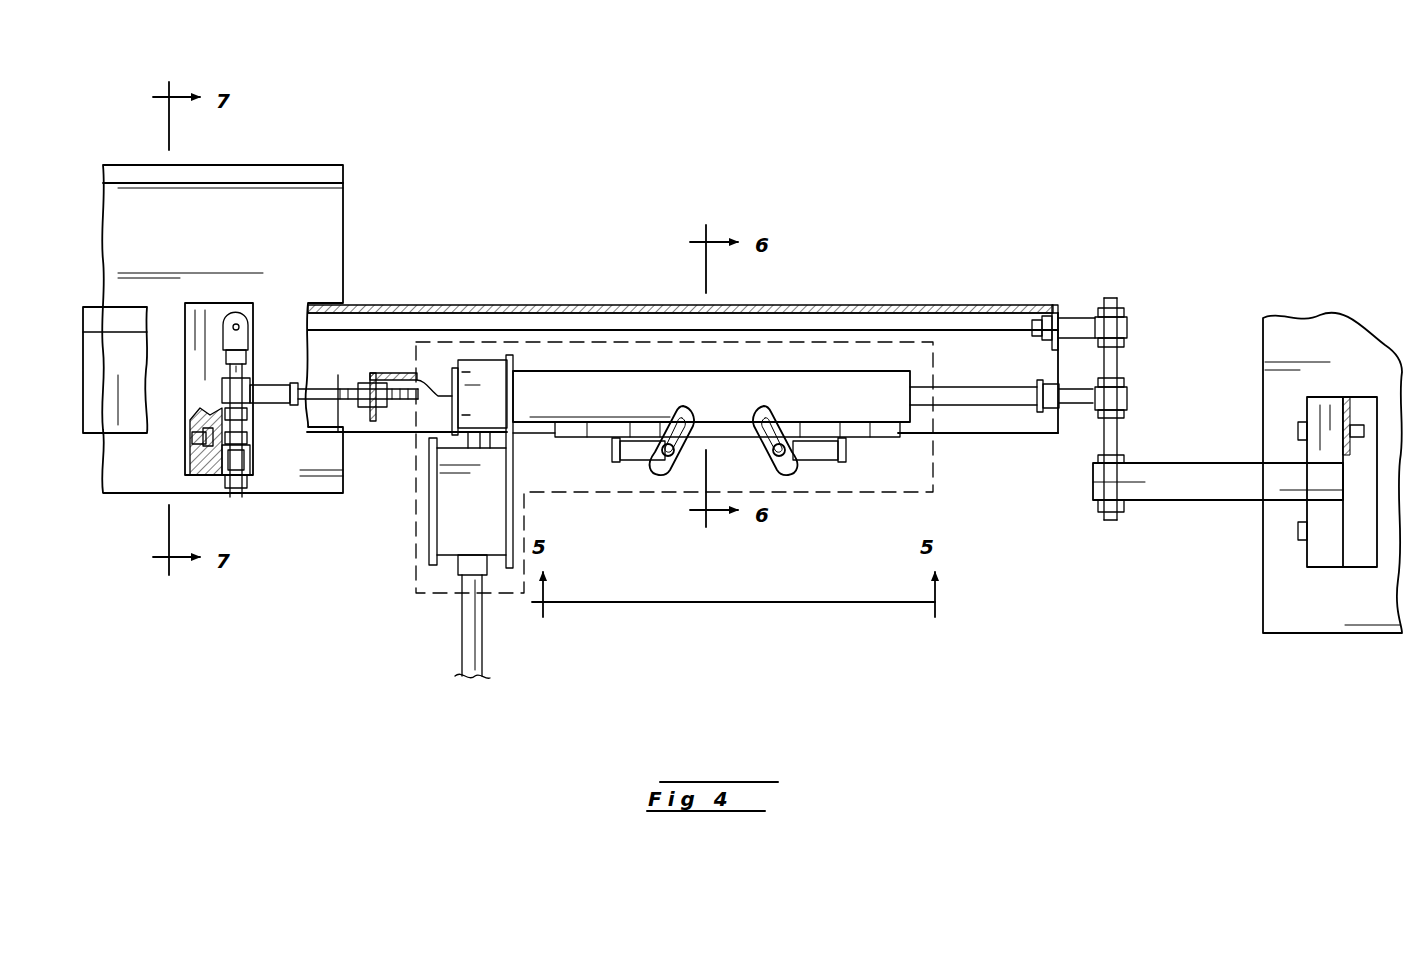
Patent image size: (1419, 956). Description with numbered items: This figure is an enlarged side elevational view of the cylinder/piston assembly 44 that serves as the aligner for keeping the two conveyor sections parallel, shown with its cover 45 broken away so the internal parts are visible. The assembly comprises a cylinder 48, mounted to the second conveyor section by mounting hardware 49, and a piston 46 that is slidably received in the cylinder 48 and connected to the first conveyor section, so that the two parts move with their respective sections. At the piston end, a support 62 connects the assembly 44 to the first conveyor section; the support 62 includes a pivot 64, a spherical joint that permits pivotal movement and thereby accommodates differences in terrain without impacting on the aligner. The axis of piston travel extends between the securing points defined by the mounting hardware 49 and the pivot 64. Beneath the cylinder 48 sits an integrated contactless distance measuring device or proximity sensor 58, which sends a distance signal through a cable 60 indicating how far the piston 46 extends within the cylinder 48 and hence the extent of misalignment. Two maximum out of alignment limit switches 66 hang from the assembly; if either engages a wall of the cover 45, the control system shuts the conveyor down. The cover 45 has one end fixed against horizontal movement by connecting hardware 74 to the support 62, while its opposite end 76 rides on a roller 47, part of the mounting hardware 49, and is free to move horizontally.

The opposite end 76 is at (140, 305).
The roller 47 is at (236, 308).
The mounting hardware 49 is at (270, 406).
The cover 45 is at (452, 305).
The cylinder/piston assembly 44 is at (543, 350).
The cylinder 48 is at (782, 364).
The proximity sensor 58 is at (487, 395).
The cable 60 is at (470, 609).
The maximum out of alignment limit switches 66 is at (660, 476).
The piston 46 is at (953, 407).
The connecting hardware 74 is at (1078, 311).
The pivot 64 is at (1127, 396).
The support 62 is at (1188, 500).